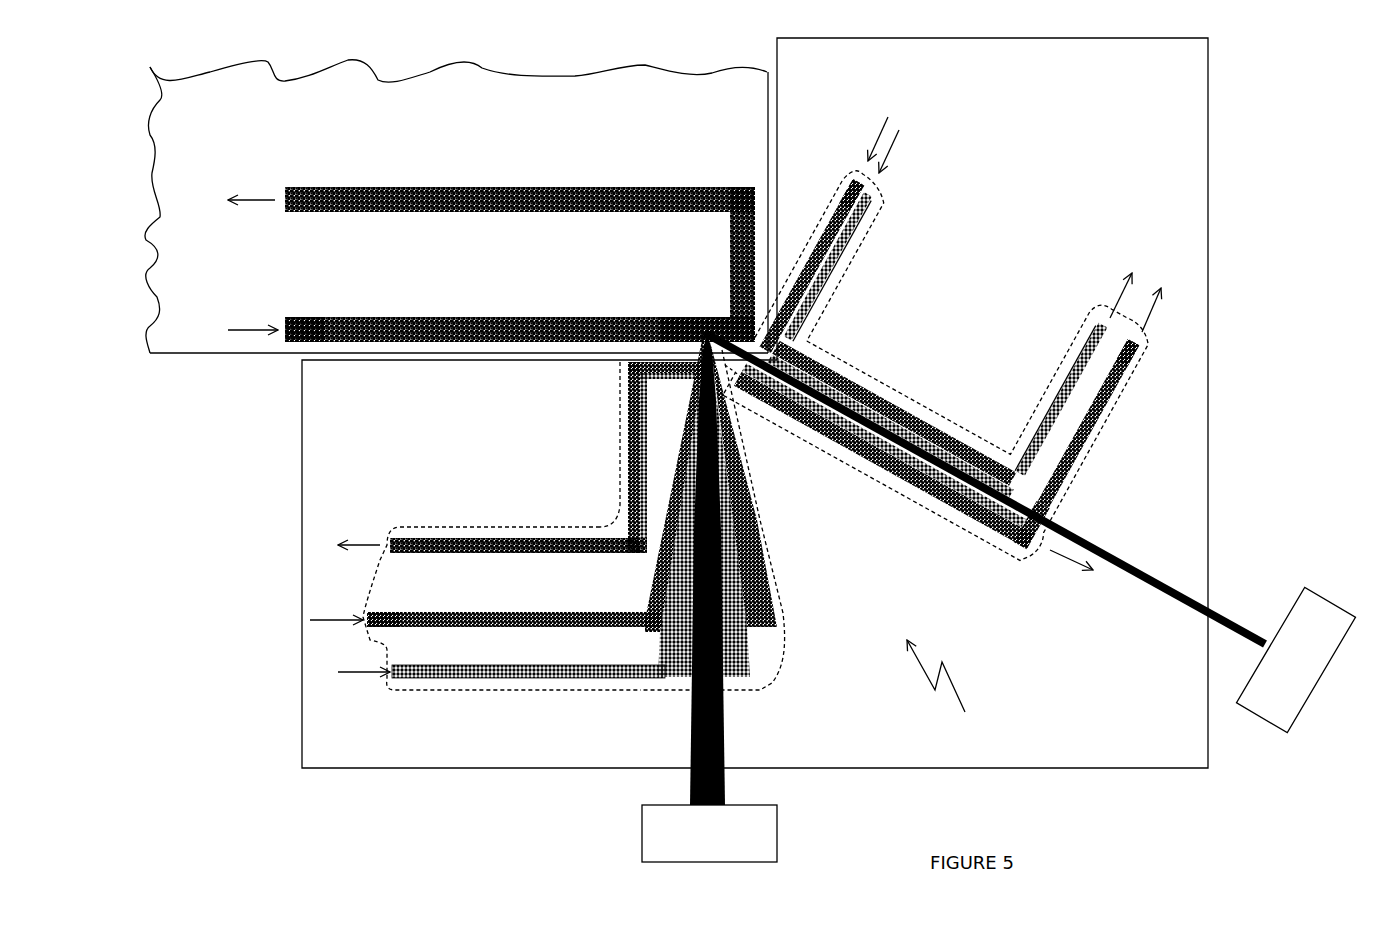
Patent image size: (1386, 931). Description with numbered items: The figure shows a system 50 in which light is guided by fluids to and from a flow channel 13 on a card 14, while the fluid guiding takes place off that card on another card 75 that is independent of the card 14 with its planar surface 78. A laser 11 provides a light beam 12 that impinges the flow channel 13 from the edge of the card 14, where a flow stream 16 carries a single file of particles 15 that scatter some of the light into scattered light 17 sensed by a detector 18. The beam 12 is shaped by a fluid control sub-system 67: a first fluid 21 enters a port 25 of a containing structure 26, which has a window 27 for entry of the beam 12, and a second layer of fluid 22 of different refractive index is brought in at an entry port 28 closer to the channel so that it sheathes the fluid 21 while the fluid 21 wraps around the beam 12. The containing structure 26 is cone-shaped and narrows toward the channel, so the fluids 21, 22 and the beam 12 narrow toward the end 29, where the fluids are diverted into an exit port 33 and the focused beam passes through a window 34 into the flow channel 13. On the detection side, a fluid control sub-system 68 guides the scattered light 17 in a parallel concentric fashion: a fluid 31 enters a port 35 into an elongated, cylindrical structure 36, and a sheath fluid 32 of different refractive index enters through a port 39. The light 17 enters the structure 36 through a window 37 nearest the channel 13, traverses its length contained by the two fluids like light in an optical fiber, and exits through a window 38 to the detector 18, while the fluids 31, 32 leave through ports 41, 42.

The laser 11 is at (642, 812).
The light beam 12 is at (725, 713).
The flow channel 13 is at (657, 317).
The card 14 is at (768, 143).
The particles 15 is at (692, 317).
The flow stream 16 is at (285, 322).
The scattered light 17 is at (1060, 522).
The detector 18 is at (1257, 675).
The fluid 21 is at (493, 672).
The second layer of fluid 22 is at (507, 610).
The port 25 is at (423, 678).
The containing structure 26 is at (680, 680).
The window 27 is at (725, 680).
The entry port 28 is at (473, 610).
The end 29 is at (725, 370).
The fluid 31 is at (885, 181).
The fluid 32 is at (863, 177).
The exit port 33 is at (517, 537).
The window 34 is at (612, 363).
The port 35 is at (827, 290).
The elongated structure 36 is at (968, 515).
The window 37 is at (760, 322).
The window 38 is at (1047, 513).
The port 39 is at (807, 243).
The port 41 is at (1037, 423).
The port 42 is at (1093, 437).
The system 50 is at (948, 692).
The fluid control sub-system 67 is at (602, 522).
The fluid control sub-system 68 is at (958, 422).
The card 75 is at (1210, 452).
The planar surface 78 is at (423, 143).